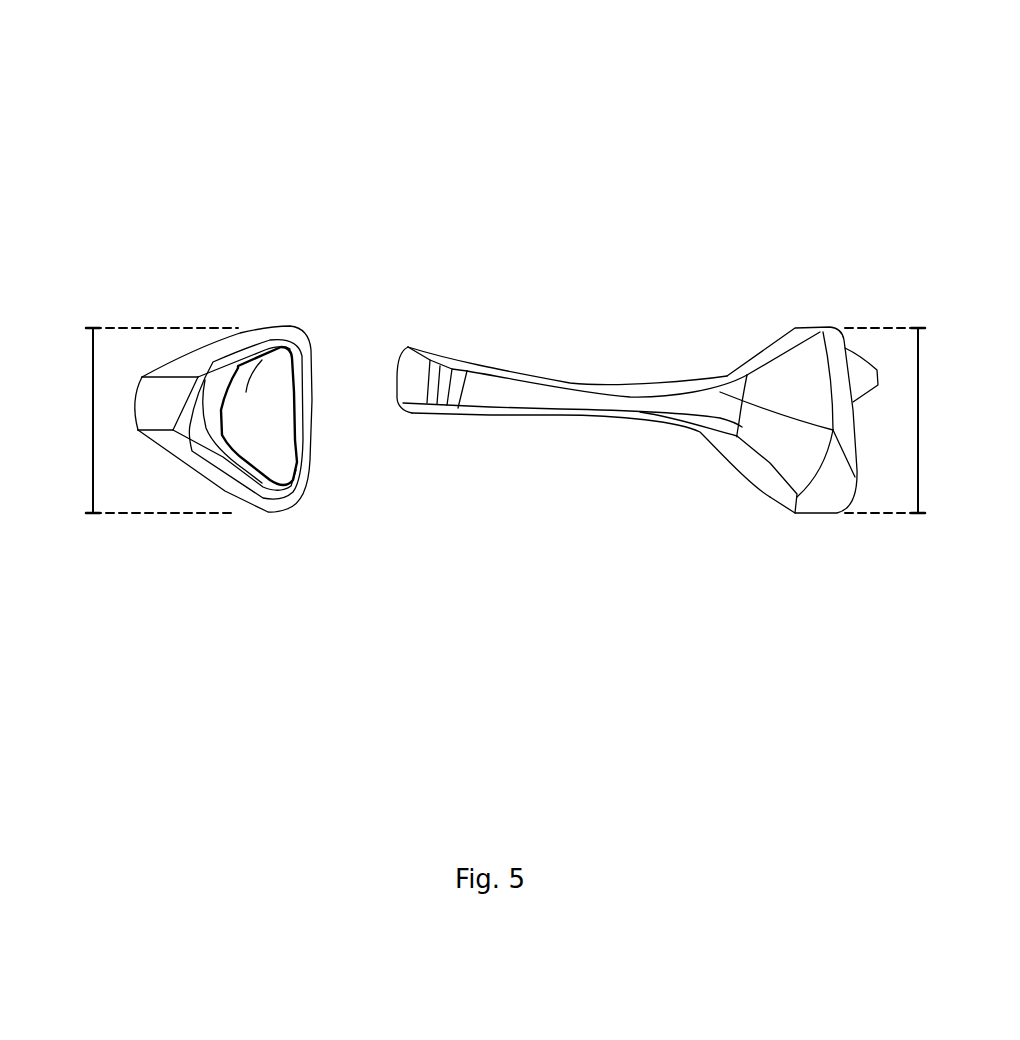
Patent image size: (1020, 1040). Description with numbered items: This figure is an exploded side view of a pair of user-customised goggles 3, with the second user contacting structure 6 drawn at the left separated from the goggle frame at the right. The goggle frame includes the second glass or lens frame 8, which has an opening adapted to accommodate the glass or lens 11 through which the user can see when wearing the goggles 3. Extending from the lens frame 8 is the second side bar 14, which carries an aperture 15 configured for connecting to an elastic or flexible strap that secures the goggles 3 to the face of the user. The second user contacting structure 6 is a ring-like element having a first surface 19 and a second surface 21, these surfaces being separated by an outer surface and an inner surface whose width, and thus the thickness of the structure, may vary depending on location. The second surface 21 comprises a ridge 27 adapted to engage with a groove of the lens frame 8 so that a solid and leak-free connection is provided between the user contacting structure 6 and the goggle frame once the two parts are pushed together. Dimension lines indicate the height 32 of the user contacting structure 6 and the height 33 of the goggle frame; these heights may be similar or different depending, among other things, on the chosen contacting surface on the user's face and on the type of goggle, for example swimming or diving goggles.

The user-customised goggles 3 is at (400, 104).
The second user contacting structure 6 is at (185, 355).
The second glass or lens frame 8 is at (798, 330).
The glass or lens 11 is at (855, 477).
The second side bar 14 is at (554, 383).
The aperture 15 is at (435, 366).
The first surface 19 is at (247, 328).
The second surface 21 is at (277, 328).
The ridge 27 is at (242, 475).
The height of the user contacting structure 32 is at (140, 420).
The height of the goggle frame 33 is at (904, 420).